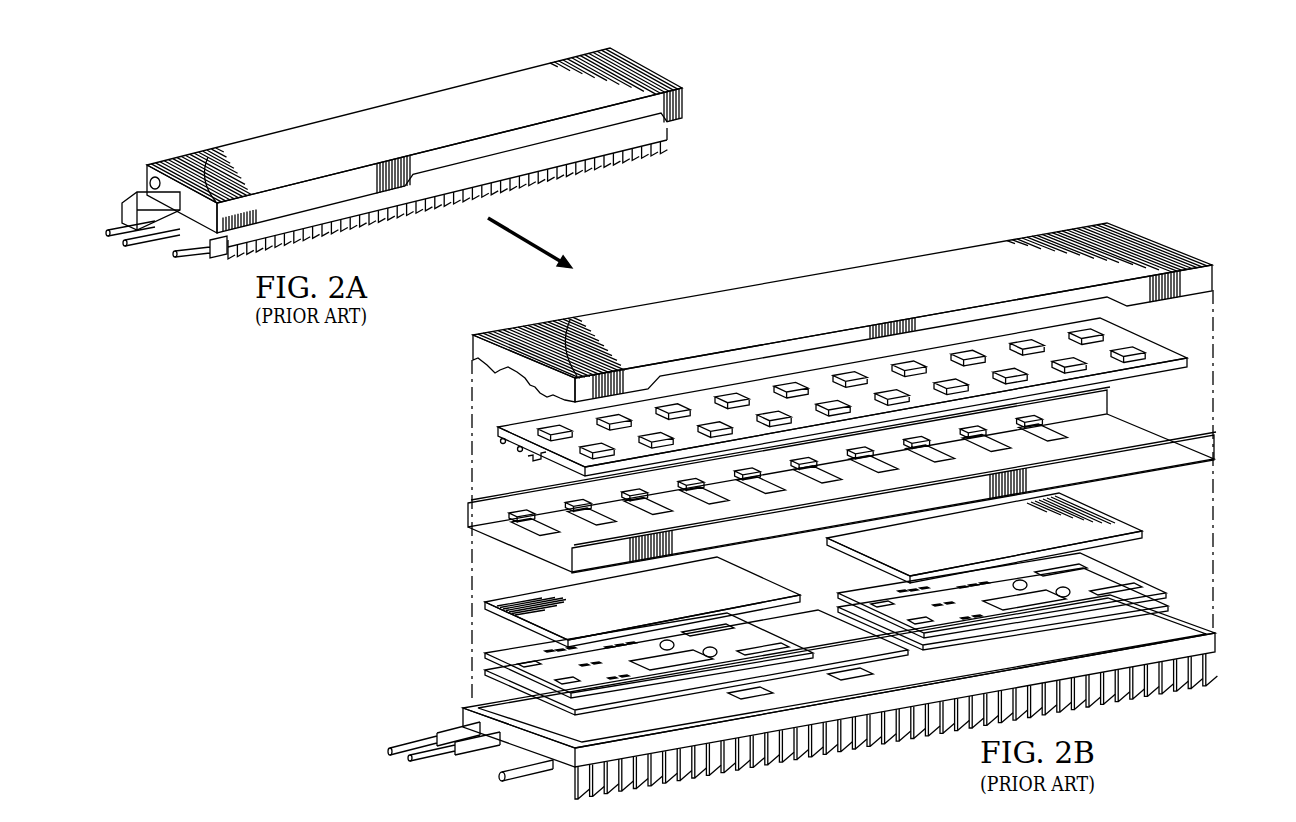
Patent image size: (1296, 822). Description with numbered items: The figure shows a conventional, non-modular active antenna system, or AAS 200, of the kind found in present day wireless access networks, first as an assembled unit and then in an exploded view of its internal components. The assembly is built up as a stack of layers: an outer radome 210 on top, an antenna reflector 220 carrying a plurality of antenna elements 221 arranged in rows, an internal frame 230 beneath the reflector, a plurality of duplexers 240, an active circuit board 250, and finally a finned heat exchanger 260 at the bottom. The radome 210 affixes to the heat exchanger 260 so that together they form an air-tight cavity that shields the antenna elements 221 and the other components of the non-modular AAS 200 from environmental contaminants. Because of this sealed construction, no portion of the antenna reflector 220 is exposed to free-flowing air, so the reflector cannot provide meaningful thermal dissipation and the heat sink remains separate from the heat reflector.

In FIG. 2A, the non-modular AAS 200 is at (335, 100).
In FIG. 2B, the non-modular AAS 200 is at (828, 243).
In FIG. 2B, the radome 210 is at (985, 260).
In FIG. 2B, the antenna reflector 220 is at (1158, 345).
In FIG. 2B, the antenna elements 221 is at (553, 430).
In FIG. 2B, the internal frame 230 is at (1130, 468).
In FIG. 2B, the duplexers 240 is at (768, 590).
In FIG. 2B, the active circuit board 250 is at (510, 655).
In FIG. 2B, the heat exchanger 260 is at (1203, 648).